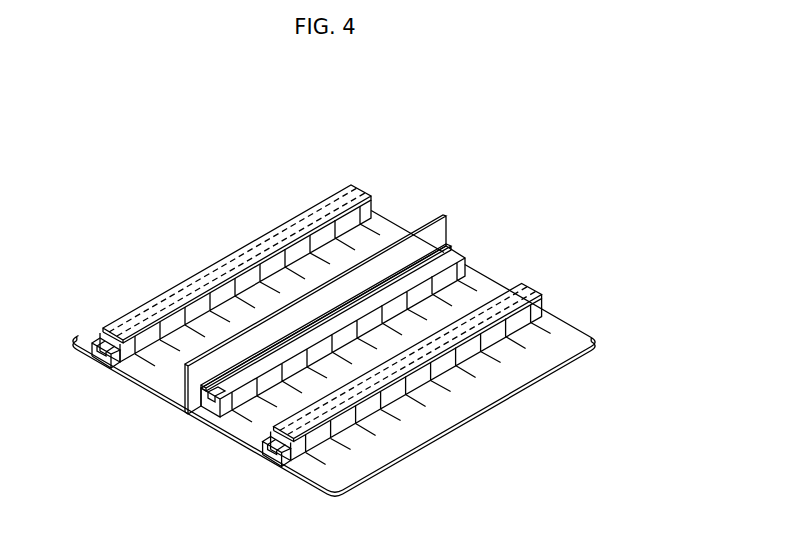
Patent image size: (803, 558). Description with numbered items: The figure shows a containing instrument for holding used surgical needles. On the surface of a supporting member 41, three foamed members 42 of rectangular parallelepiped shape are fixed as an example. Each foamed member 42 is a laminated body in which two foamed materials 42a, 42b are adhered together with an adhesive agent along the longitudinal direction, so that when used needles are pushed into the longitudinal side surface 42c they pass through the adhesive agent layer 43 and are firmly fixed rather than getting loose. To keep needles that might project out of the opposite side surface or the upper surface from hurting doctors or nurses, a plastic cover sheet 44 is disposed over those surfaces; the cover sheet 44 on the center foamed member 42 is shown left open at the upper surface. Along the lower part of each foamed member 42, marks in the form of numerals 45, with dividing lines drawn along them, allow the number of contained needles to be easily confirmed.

The supporting member 41 is at (608, 349).
The foamed member 42 is at (329, 356).
The foamed material 42a is at (464, 254).
The foamed material 42b is at (447, 238).
The longitudinal side surface 42c is at (131, 360).
The adhesive agent layer 43 is at (447, 246).
The cover sheet 44 is at (322, 201).
The marks (numerals) 45 is at (383, 231).